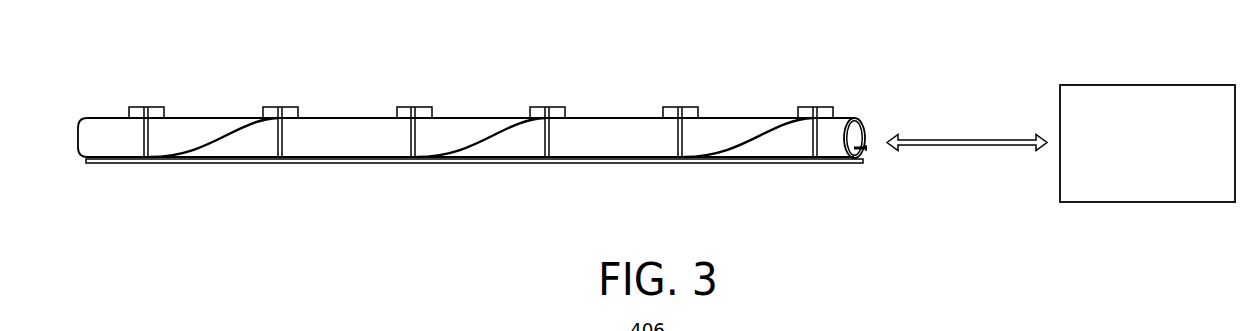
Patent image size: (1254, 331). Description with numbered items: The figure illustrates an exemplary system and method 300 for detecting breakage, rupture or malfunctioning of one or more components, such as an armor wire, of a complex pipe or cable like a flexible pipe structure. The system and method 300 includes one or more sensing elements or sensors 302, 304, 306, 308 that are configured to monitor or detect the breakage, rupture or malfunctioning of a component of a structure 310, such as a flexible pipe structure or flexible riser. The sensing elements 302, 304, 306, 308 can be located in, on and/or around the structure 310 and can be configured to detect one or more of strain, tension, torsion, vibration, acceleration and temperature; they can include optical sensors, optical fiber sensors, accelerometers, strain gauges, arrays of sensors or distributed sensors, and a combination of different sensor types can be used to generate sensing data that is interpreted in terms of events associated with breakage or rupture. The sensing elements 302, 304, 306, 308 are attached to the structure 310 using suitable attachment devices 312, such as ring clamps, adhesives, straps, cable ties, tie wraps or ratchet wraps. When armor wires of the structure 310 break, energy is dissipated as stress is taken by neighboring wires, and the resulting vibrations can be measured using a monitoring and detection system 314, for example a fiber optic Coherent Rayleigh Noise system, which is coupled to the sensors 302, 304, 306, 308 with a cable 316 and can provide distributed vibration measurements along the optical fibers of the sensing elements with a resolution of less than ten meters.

The system and method for detecting breakage, rupture or malfunctioning 300 is at (1253, 261).
The sensing element 302 is at (153, 105).
The sensing element 304 is at (233, 137).
The sensing element 306 is at (868, 151).
The sensing element 308 is at (770, 164).
The structure 310 is at (867, 138).
The attachment device 312 is at (417, 132).
The monitoring and detection system 314 is at (1130, 192).
The cable 316 is at (960, 147).